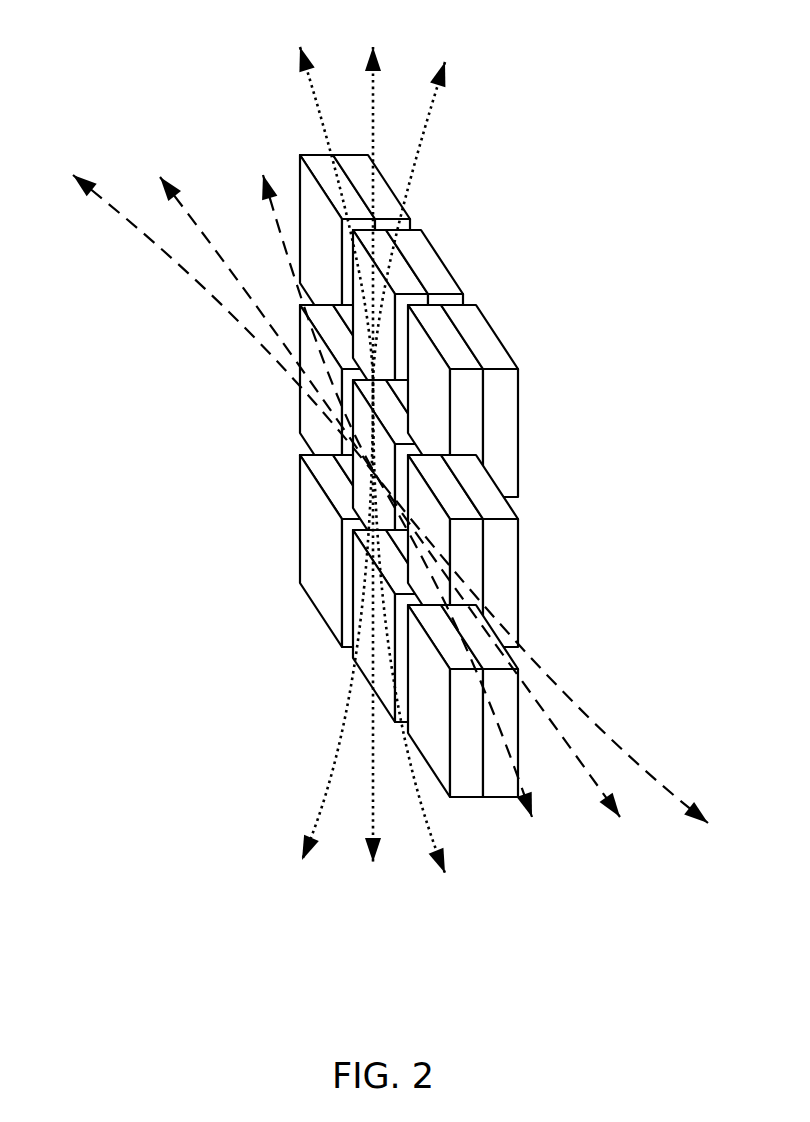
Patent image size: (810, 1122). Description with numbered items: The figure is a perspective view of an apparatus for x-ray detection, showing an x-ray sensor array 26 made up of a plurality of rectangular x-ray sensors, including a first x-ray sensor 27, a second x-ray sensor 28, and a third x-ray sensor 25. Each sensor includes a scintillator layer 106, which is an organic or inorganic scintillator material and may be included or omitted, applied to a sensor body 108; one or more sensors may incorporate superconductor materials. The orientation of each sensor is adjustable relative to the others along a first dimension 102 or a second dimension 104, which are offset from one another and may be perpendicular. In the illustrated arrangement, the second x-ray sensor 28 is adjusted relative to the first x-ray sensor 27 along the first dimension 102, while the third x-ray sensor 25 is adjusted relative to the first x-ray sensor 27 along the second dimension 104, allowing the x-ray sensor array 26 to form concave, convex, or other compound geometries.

The x-ray sensor array 26 is at (202, 93).
The second x-ray sensor 28 is at (455, 278).
The first x-ray sensor 27 is at (513, 404).
The sensor body 108 is at (505, 437).
The scintillator layer 106 is at (468, 457).
The third x-ray sensor 25 is at (518, 583).
The first dimension 102 is at (580, 760).
The second dimension 104 is at (373, 818).